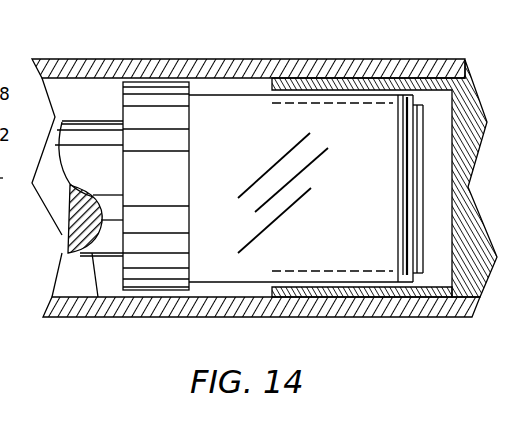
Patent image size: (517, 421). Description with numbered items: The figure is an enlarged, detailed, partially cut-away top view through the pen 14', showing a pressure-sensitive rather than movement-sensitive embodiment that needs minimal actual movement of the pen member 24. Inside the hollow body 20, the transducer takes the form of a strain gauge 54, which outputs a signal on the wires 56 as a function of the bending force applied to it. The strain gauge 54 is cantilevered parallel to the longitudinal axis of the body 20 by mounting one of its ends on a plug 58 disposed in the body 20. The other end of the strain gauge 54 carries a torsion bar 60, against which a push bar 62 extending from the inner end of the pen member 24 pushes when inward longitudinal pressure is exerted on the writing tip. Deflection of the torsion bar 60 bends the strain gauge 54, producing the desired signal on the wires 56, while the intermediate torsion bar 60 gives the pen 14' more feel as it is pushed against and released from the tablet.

The pen 14' is at (256, 219).
The body 20 is at (65, 317).
The pen member 24 is at (98, 297).
The strain gauge 54 is at (51, 219).
The wires 56 is at (61, 202).
The plug 58 is at (473, 317).
The torsion bar 60 is at (419, 297).
The push bar 62 is at (347, 250).